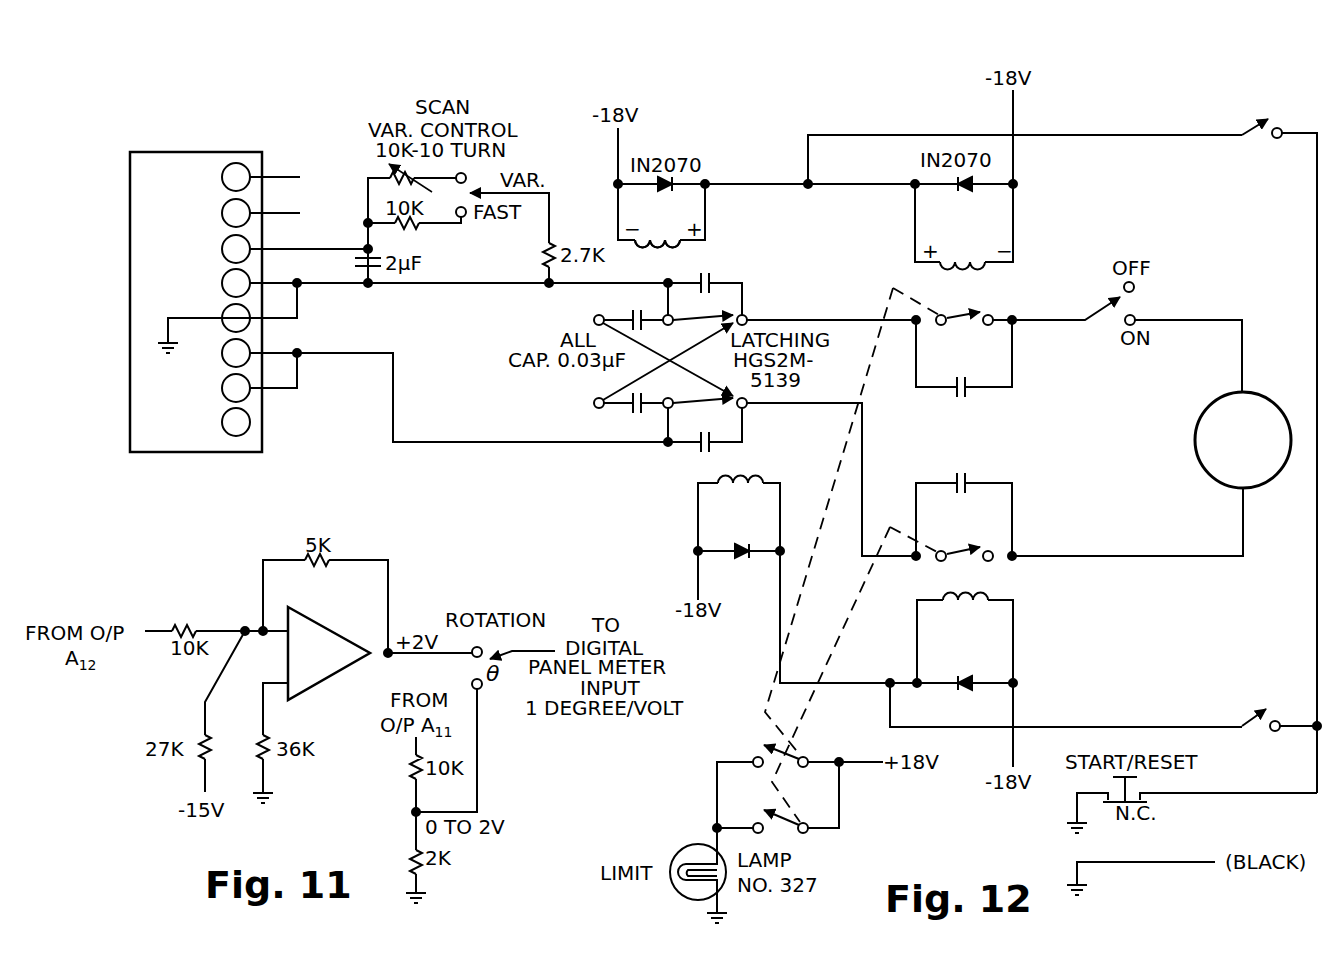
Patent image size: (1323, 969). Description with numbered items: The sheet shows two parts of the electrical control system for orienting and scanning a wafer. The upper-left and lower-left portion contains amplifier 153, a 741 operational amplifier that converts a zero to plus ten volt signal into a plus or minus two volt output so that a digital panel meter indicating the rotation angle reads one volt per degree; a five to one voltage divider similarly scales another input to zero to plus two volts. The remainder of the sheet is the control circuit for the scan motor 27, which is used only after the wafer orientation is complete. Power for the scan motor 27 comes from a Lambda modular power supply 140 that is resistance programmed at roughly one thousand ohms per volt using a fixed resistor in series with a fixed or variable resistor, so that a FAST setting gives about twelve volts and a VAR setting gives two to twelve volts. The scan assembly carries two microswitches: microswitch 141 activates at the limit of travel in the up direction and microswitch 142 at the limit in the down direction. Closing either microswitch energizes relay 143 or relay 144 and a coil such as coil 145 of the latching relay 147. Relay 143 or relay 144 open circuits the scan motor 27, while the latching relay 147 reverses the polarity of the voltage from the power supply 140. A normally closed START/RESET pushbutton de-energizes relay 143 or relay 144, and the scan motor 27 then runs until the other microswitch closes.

In FIG. 12, the modular power supply 140 is at (215, 293).
In FIG. 12, the up microswitch 141 is at (1262, 124).
In FIG. 12, the down microswitch 142 is at (1258, 714).
In FIG. 12, the relay 143 is at (1033, 340).
In FIG. 12, the relay 144 is at (996, 586).
In FIG. 12, the coil 145 is at (674, 243).
In FIG. 12, the latching relay 147 is at (724, 160).
In FIG. 12, the scan motor 27 is at (1270, 404).
In FIG. 11, the amplifier 153 is at (304, 692).